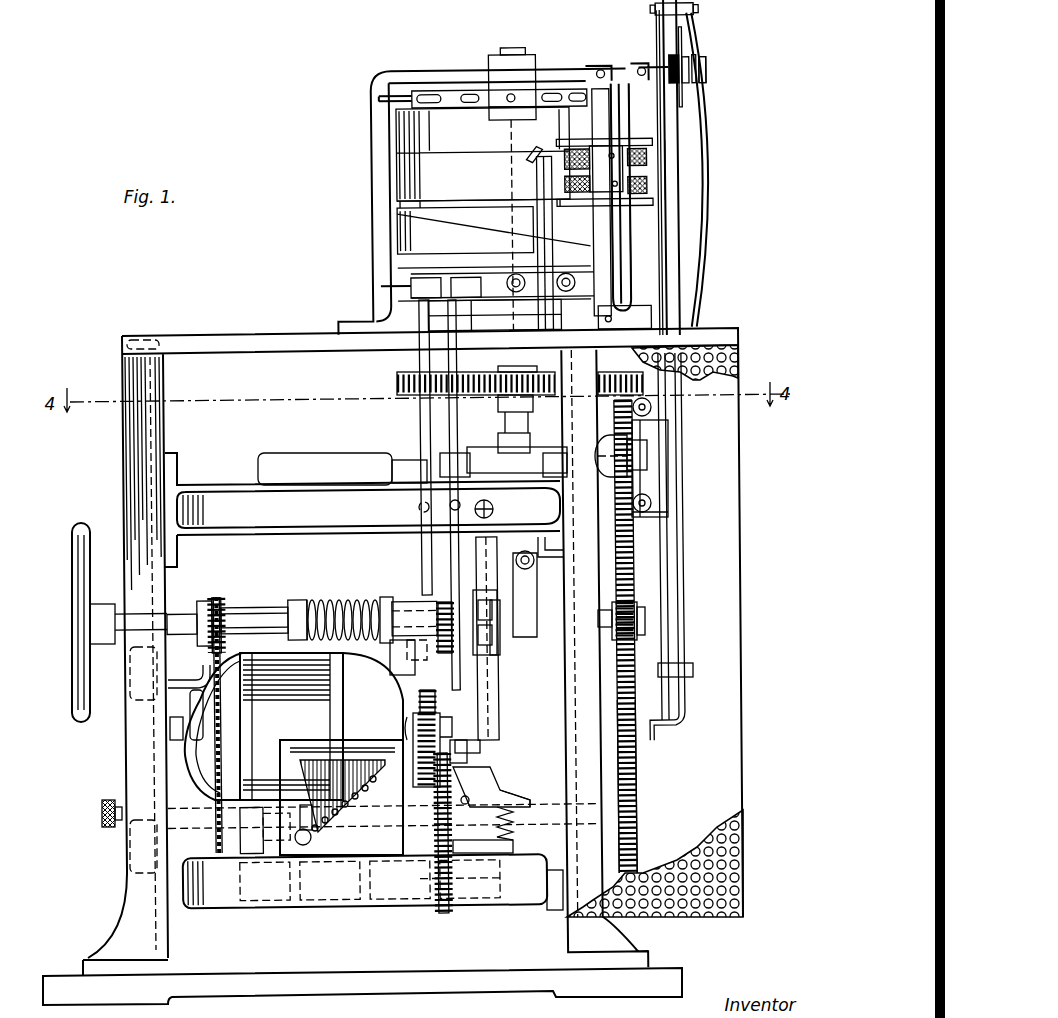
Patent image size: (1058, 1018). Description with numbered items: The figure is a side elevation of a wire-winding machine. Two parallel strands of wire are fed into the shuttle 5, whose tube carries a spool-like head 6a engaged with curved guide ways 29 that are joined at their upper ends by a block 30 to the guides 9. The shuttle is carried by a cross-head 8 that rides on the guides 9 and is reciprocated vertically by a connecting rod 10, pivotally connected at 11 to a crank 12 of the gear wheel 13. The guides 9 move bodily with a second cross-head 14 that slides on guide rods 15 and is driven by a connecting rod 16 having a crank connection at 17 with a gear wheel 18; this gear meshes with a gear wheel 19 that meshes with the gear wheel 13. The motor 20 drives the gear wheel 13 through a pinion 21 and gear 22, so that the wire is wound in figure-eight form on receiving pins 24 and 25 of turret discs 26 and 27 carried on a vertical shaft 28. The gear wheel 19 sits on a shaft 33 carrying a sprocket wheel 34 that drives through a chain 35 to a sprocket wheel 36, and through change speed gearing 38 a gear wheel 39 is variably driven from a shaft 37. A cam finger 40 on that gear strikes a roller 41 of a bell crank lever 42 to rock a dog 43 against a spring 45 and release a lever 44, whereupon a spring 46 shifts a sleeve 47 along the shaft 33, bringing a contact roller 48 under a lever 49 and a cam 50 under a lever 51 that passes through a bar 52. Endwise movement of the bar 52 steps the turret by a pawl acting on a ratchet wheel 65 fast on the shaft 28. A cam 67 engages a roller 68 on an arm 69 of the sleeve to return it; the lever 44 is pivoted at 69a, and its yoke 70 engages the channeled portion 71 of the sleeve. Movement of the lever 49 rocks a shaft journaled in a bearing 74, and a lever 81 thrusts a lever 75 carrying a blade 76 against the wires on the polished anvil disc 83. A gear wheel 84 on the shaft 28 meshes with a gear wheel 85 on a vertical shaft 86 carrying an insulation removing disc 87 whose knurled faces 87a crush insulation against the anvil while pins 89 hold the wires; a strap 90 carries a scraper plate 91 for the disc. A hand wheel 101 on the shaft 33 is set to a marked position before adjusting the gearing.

The shuttle 5 is at (707, 55).
The spool-like head 6a is at (707, 72).
The cross-head 8 is at (683, 100).
The guides 9 is at (678, 187).
The connecting rod 10 is at (680, 290).
The pivotal connection 11 is at (693, 670).
The crank 12 is at (685, 702).
The gear wheel 13 is at (638, 838).
The cross-head 14 is at (668, 487).
The guide rods 15 is at (651, 504).
The connecting rod 16 is at (647, 448).
The crank connection 17 is at (627, 467).
The gear wheel 18 is at (648, 512).
The gear wheel 19 is at (634, 569).
The motor 20 is at (294, 726).
The pinion 21 is at (413, 720).
The gear 22 is at (435, 700).
The receiving pins 24 is at (380, 97).
The receiving pins 25 is at (380, 285).
The turret disc 26 is at (449, 92).
The turret disc 27 is at (455, 277).
The vertical shaft 28 is at (505, 128).
The curved guide ways 29 is at (708, 245).
The block 30 is at (698, 10).
The shaft 33 is at (645, 624).
The sprocket wheel 34 is at (221, 598).
The chain 35 is at (214, 650).
The sprocket wheel 36 is at (240, 835).
The shaft 37 is at (420, 905).
The change speed gearing 38 is at (325, 862).
The gear wheel 39 is at (410, 790).
The cam finger 40 is at (480, 760).
The roller 41 is at (467, 745).
The bell crank lever 42 is at (487, 778).
The dog 43 is at (530, 803).
The lever 44 is at (499, 697).
The spring 45 is at (513, 827).
The spring 46 is at (345, 600).
The sleeve 47 is at (388, 597).
The contact roller 48 is at (405, 662).
The lever 49 is at (421, 555).
The cam 50 is at (438, 630).
The lever 51 is at (451, 571).
The bar 52 is at (448, 467).
The ratchet wheel 65 is at (523, 467).
The cam 67 is at (562, 558).
The roller 68 is at (516, 560).
The arm 69 is at (530, 585).
The pivot 69a is at (494, 512).
The yoke 70 is at (493, 640).
The annularly channeled portion 71 is at (500, 655).
The bearing 74 is at (494, 315).
The lever 75 is at (537, 210).
The blade 76 is at (538, 150).
The lever 81 is at (552, 222).
The anvil disc 83 is at (483, 157).
The gear wheel 84 is at (397, 383).
The gear wheel 85 is at (625, 355).
The vertical shaft 86 is at (610, 240).
The insulation removing disc 87 is at (590, 165).
The knurled faces 87a is at (647, 185).
The pins 89 is at (636, 207).
The strap 90 is at (620, 262).
The scraper plate 91 is at (606, 169).
The hand wheel 101 is at (75, 690).